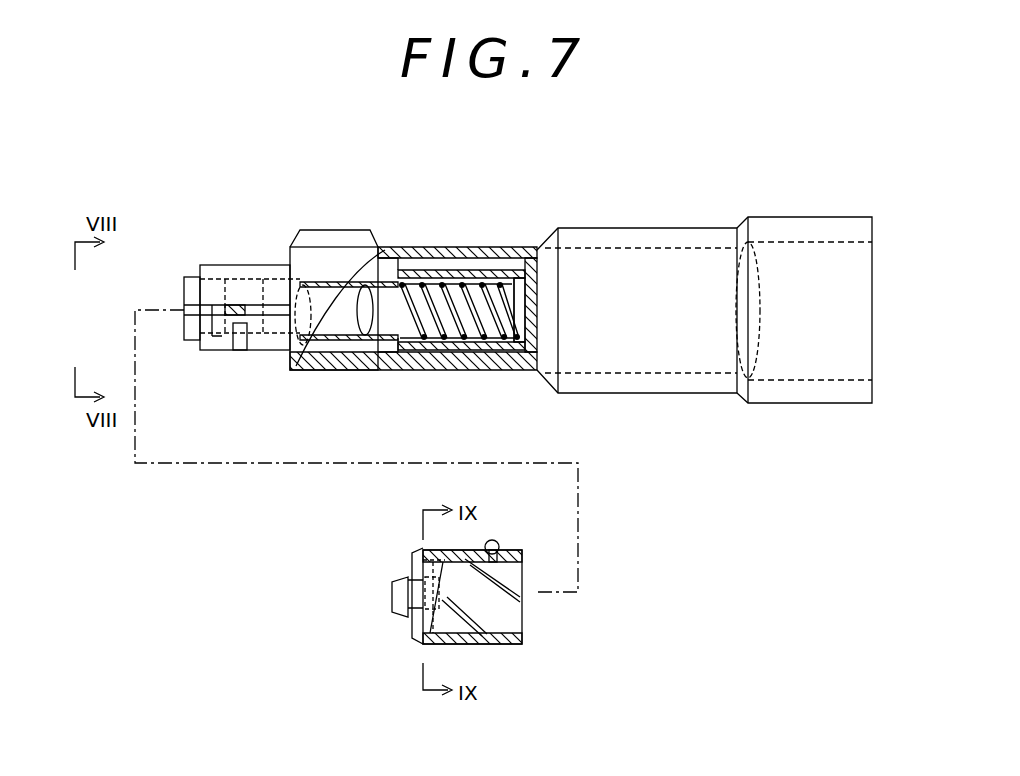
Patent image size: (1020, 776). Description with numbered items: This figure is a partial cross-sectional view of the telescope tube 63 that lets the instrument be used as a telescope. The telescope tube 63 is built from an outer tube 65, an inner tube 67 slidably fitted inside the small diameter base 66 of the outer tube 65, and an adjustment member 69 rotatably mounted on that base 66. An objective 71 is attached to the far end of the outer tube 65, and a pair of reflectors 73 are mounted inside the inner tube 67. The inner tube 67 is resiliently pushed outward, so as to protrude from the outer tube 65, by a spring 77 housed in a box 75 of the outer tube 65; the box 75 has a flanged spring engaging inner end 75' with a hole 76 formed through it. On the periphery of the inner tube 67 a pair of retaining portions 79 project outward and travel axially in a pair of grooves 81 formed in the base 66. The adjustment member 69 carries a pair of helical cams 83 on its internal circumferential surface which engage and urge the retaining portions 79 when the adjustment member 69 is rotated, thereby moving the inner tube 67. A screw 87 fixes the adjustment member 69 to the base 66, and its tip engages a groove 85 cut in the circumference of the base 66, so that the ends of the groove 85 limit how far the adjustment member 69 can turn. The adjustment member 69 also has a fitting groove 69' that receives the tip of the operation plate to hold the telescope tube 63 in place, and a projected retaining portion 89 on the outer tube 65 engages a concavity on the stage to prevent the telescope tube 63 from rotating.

The telescope tube 63 is at (493, 236).
The outer tube 65 is at (655, 228).
The base 66 is at (251, 265).
The inner tube 67 is at (335, 370).
The adjustment member 69 is at (497, 615).
The fitting groove 69' is at (384, 575).
The objective 71 is at (765, 278).
The reflectors 73 is at (380, 352).
The box 75 is at (461, 352).
The flanged spring engaging inner end 75' is at (578, 317).
The hole 76 is at (528, 300).
The spring 77 is at (500, 352).
The retaining portions 79 is at (190, 308).
The grooves 81 is at (220, 307).
The cams 83 is at (478, 632).
The groove 85 is at (240, 350).
The screw 87 is at (497, 542).
The projected retaining portion 89 is at (346, 230).